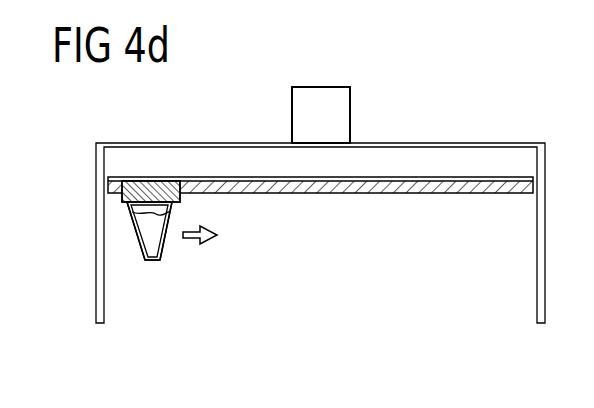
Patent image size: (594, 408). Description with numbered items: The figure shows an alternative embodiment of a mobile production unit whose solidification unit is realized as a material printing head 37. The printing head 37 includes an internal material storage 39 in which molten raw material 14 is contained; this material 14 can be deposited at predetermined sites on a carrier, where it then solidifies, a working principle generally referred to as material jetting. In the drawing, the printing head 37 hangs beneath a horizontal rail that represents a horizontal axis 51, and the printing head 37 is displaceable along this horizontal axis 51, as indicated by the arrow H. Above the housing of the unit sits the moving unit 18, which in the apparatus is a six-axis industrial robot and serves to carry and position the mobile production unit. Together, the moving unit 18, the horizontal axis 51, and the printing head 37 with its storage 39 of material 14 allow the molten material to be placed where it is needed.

The molten raw material 14 is at (155, 262).
The moving unit 18 is at (320, 103).
The material printing head 37 is at (146, 183).
The internal material storage 39 is at (146, 230).
The horizontal axis 51 is at (423, 195).
The arrow H is at (197, 242).